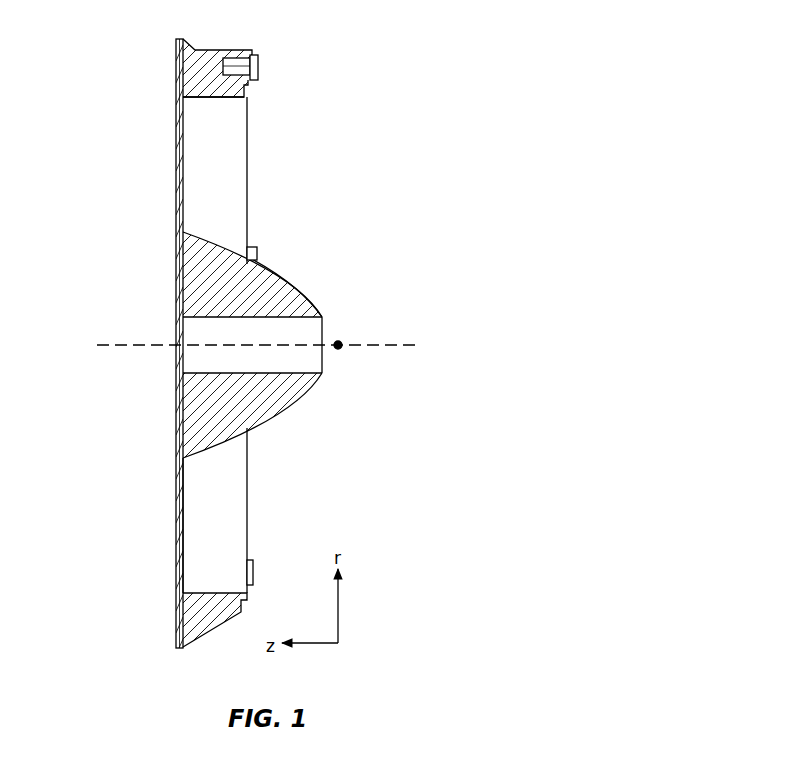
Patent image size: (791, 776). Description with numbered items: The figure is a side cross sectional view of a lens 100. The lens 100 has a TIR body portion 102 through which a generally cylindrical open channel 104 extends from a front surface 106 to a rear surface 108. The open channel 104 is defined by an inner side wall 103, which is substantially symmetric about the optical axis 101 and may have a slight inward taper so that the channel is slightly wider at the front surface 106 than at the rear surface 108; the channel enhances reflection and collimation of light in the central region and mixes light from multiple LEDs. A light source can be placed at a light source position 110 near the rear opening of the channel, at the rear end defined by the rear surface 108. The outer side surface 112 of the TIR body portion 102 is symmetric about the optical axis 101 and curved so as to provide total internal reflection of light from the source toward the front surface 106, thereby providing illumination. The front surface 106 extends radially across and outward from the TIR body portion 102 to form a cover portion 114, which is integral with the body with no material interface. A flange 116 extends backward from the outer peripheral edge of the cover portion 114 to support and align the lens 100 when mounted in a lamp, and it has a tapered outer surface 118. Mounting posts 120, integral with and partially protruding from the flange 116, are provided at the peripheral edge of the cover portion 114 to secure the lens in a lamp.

The lens 100 is at (395, 129).
The optical axis 101 is at (395, 343).
The TIR body portion 102 is at (272, 402).
The inner side wall 103 is at (192, 371).
The open channel 104 is at (193, 335).
The front surface 106 is at (173, 250).
The rear surface 108 is at (328, 374).
The light source position 110 is at (339, 341).
The outer side surface 112 is at (303, 286).
The cover portion 114 is at (180, 478).
The flange 116 is at (237, 173).
The tapered outer surface 118 is at (203, 630).
The mounting posts 120 is at (258, 64).